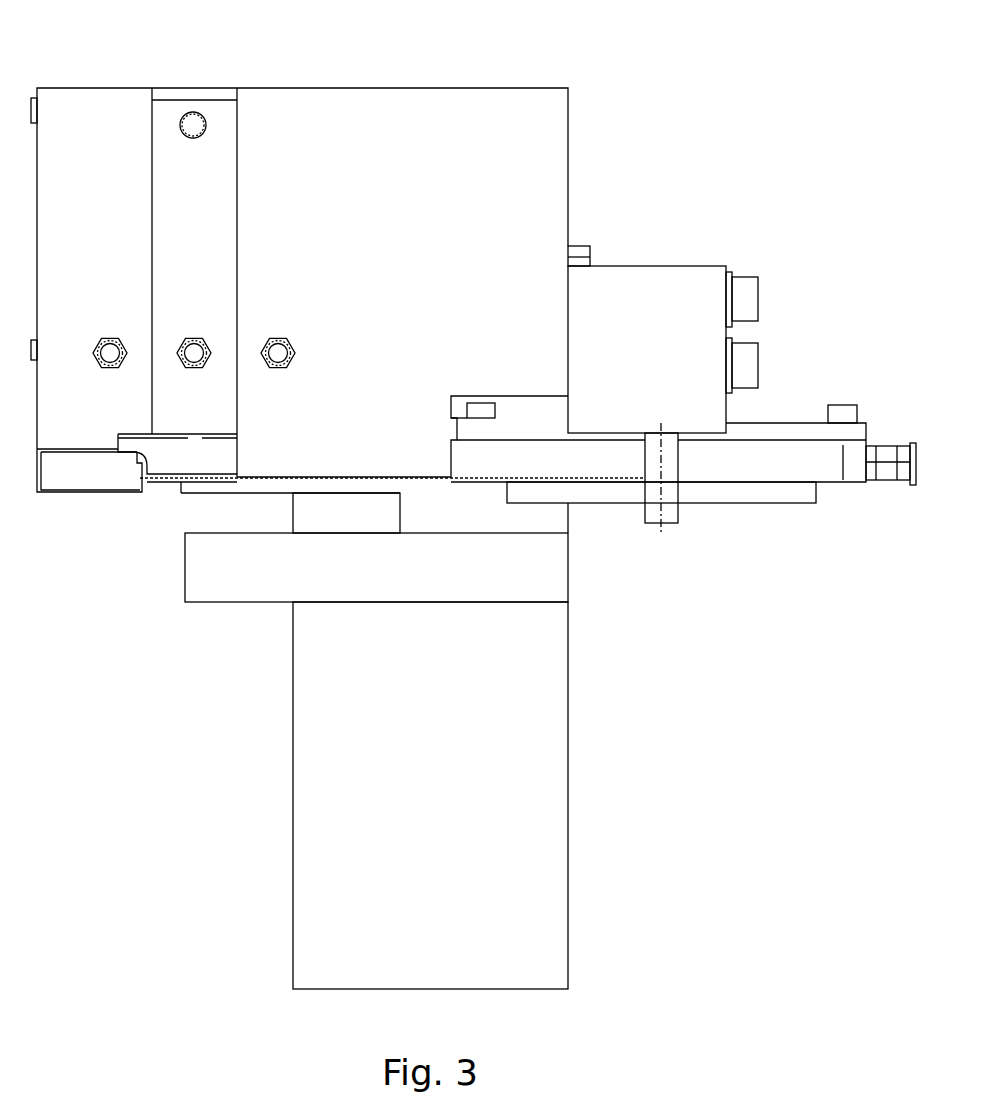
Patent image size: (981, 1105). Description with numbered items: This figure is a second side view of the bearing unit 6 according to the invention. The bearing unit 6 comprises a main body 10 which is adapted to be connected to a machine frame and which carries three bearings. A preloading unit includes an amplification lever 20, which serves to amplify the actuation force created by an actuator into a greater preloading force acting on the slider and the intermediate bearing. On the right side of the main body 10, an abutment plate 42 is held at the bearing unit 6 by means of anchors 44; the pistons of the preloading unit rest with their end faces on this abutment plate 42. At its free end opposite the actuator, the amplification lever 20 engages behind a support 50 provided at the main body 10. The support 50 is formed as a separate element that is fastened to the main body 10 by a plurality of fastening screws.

The bearing unit 6 is at (674, 97).
The main body 10 is at (472, 101).
The amplification lever 20 is at (182, 457).
The abutment plate 42 is at (765, 493).
The anchors 44 is at (649, 466).
The support 50 is at (72, 480).